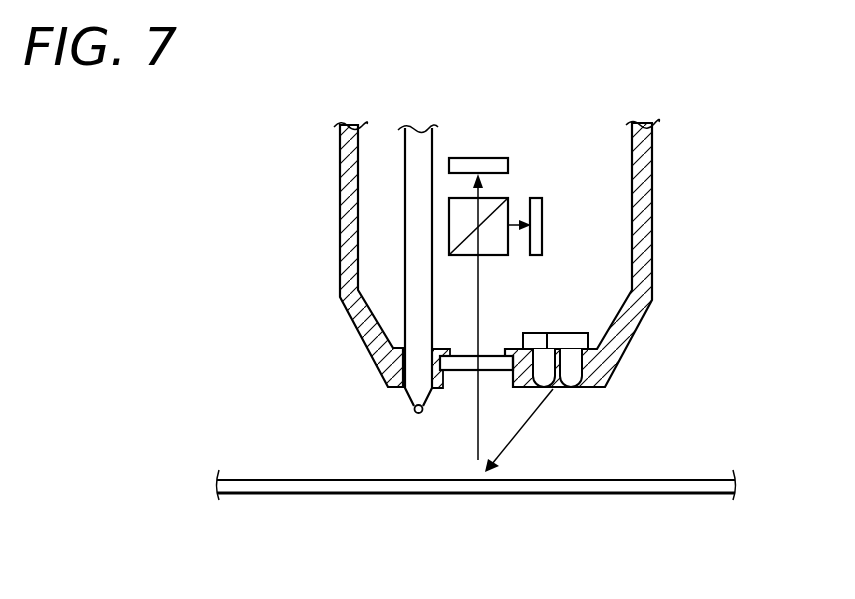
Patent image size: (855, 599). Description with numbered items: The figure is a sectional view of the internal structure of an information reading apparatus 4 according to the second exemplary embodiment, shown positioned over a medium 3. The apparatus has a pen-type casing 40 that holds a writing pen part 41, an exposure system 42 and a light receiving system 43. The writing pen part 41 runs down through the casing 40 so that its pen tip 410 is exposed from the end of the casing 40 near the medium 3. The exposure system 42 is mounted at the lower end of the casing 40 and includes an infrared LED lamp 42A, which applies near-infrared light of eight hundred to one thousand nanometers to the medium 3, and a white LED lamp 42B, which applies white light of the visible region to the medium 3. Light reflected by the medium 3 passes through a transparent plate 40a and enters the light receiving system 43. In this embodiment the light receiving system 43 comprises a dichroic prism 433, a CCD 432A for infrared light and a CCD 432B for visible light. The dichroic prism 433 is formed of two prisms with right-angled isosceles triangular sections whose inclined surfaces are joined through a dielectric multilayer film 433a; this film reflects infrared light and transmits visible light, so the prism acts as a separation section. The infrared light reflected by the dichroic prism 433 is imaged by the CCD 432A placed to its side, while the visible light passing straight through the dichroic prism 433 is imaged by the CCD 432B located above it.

The medium 3 is at (330, 483).
The information reading apparatus 4 is at (352, 103).
The casing 40 is at (350, 232).
The transparent plate 40a is at (466, 362).
The writing pen part 41 is at (396, 299).
The pen tip 410 is at (413, 410).
The exposure system 42 is at (687, 395).
The infrared LED lamp 42A is at (557, 385).
The white LED lamp 42B is at (571, 386).
The light receiving system 43 is at (772, 25).
The CCD for infrared light 432A is at (537, 225).
The CCD for visible light 432B is at (502, 163).
The dichroic prism 433 is at (503, 212).
The dielectric multilayer film 433a is at (508, 198).